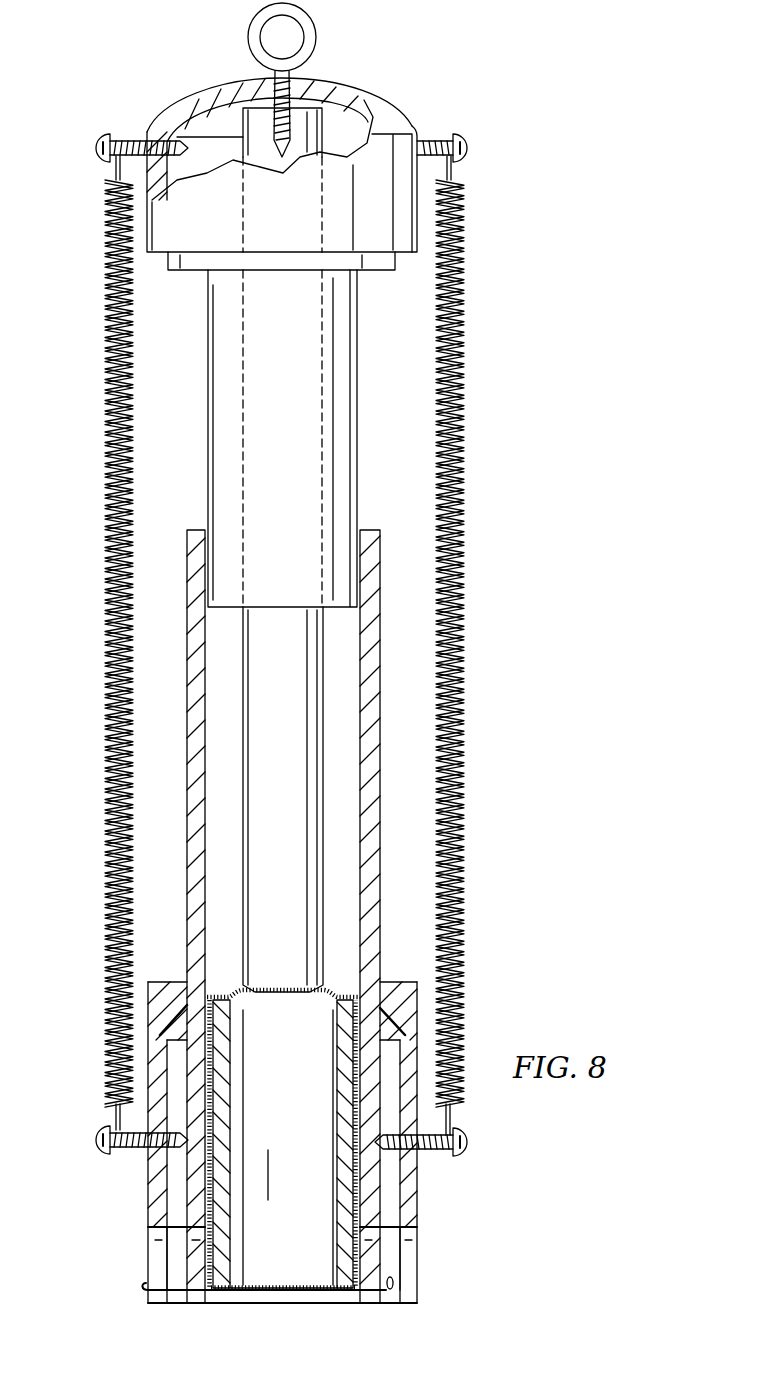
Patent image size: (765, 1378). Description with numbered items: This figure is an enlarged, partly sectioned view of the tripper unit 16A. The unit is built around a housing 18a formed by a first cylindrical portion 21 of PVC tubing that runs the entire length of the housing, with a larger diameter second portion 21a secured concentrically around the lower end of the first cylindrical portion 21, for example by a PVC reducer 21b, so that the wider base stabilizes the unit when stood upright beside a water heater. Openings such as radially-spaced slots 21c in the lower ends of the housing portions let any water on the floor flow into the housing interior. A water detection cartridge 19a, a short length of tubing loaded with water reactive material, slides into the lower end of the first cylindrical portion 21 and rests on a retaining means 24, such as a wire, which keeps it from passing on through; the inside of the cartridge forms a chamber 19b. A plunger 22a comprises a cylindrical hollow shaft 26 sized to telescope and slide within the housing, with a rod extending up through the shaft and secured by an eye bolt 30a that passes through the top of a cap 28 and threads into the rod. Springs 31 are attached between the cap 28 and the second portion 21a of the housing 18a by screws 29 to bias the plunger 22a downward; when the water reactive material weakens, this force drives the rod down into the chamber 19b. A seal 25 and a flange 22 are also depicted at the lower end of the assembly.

The tripper unit 16A is at (602, 324).
The housing 18a is at (397, 660).
The water detection cartridge 19a is at (360, 1012).
The chamber 19b is at (300, 1108).
The first cylindrical portion 21 is at (187, 572).
The second portion 21a is at (148, 1172).
The PVC reducer 21b is at (155, 1268).
The radially-spaced slots 21c is at (197, 1247).
The lower cap flange 22 is at (178, 982).
The plunger 22a is at (444, 82).
The retaining means 24 is at (178, 1289).
The seal 25 is at (232, 993).
The hollow shaft 26 is at (292, 717).
The cap 28 is at (178, 108).
The screws 29 is at (470, 146).
The eye bolt 30a is at (250, 43).
The springs 31 is at (105, 578).